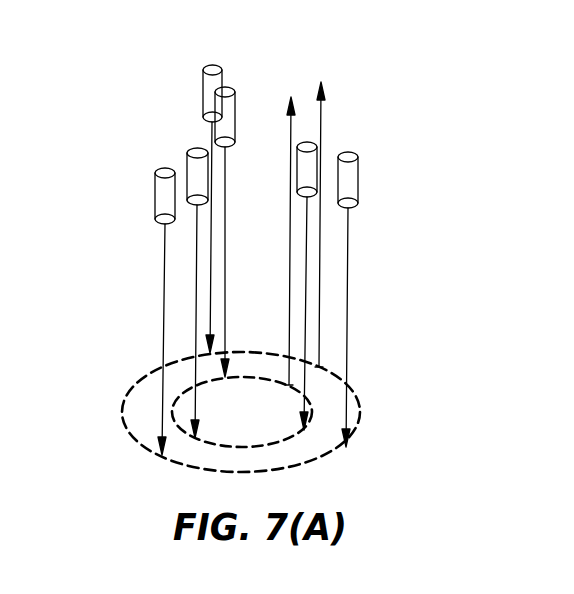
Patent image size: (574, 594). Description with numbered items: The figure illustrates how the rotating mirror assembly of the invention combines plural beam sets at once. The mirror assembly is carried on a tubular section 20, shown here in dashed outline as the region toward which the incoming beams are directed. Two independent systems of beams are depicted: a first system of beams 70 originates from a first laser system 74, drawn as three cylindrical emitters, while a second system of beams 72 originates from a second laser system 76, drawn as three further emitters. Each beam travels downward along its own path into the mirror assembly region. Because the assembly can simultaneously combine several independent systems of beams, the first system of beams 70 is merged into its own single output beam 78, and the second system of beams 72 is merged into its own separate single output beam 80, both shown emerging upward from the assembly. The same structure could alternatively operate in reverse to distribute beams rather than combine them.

The tubular section 20 is at (128, 395).
The system of beams 70 is at (210, 133).
The system of beams 72 is at (226, 181).
The laser system 74 is at (208, 66).
The laser system 76 is at (197, 152).
The output beam 78 is at (321, 115).
The output beam 80 is at (291, 128).